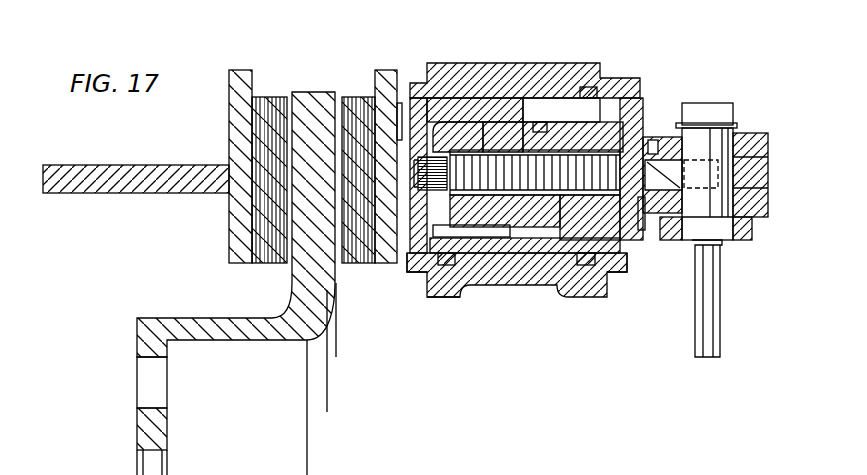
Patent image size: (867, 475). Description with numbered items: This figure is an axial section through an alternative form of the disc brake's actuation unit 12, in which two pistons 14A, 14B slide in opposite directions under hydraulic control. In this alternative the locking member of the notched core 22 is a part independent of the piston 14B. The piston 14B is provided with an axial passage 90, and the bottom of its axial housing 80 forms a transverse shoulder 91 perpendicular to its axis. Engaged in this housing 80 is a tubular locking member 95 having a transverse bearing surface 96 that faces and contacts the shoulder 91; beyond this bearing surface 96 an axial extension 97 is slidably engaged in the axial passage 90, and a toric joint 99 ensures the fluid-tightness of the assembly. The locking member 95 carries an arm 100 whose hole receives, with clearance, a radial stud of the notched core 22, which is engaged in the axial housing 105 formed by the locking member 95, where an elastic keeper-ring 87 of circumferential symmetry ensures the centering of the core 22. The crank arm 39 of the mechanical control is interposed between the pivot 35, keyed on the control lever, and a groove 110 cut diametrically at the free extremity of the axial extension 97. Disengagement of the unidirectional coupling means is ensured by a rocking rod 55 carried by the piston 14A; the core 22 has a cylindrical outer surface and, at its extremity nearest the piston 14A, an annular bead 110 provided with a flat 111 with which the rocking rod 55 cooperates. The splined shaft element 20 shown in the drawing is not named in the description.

The actuation unit 12 is at (596, 60).
The piston 14A is at (412, 122).
The piston 14B is at (632, 85).
The splined shaft 20 is at (545, 250).
The notched core 22 is at (466, 120).
The pivot 35 is at (736, 152).
The crank arm 39 is at (664, 172).
The rocking rod 55 is at (472, 262).
The axial housing 80 is at (549, 118).
The elastic keeper-ring 87 is at (533, 100).
The axial passage 90 is at (639, 207).
The transverse shoulder 91 is at (565, 125).
The tubular locking member 95 is at (517, 262).
The transverse bearing surface 96 is at (580, 262).
The axial extension 97 is at (622, 128).
The toric joint 99 is at (606, 262).
The arm 100 is at (480, 145).
The axial housing 105 is at (500, 235).
The groove / annular bead 110 is at (647, 205).
The flat 111 is at (462, 292).